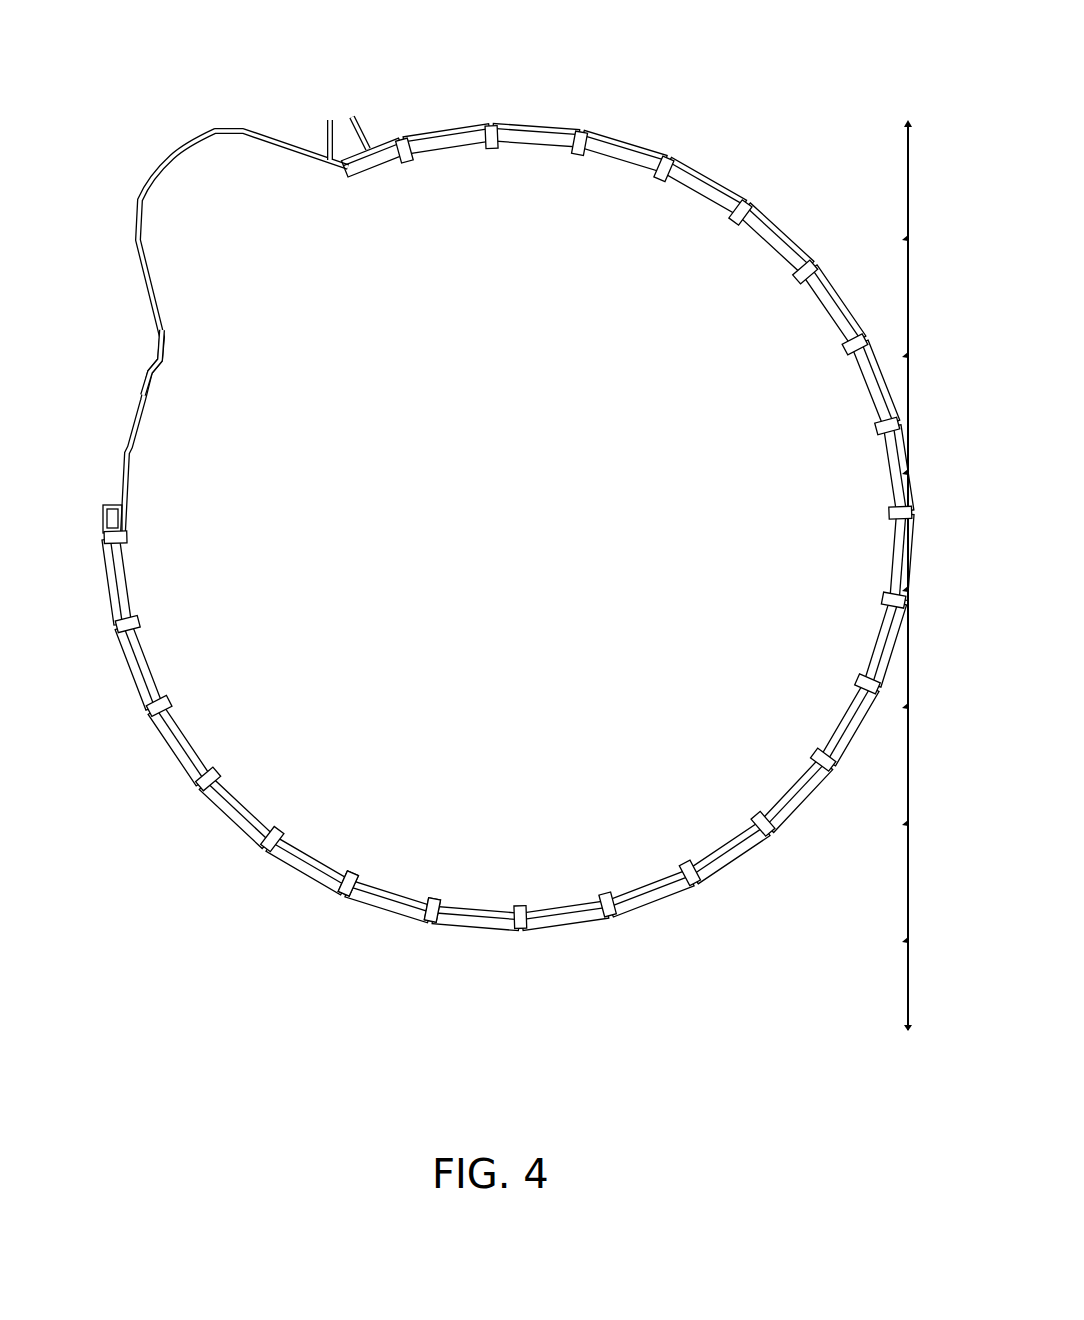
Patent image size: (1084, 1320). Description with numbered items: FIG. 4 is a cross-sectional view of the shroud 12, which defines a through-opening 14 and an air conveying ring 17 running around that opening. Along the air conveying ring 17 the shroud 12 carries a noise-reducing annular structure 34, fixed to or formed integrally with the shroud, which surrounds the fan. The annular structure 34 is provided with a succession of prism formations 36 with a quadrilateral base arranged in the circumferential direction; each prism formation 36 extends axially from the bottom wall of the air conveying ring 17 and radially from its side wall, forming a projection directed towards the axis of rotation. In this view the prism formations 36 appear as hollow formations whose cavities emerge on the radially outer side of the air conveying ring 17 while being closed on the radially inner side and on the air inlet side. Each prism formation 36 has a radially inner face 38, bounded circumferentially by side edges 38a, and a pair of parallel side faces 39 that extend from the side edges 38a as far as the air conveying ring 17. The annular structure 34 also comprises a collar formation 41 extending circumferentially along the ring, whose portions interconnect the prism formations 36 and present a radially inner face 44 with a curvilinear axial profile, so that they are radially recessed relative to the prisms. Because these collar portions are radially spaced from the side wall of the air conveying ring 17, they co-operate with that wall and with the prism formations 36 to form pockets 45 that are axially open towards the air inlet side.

The shroud 12 is at (211, 123).
The through-opening 14 is at (150, 432).
The air conveying ring 17 is at (140, 377).
The noise-reducing annular structure 34 is at (551, 122).
The prism formations 36 is at (762, 815).
The radially inner face 38 is at (436, 898).
The side edges 38a is at (350, 877).
The side faces 39 is at (386, 906).
The collar formation 41 is at (250, 798).
The radially inner face 44 is at (583, 896).
The pockets 45 is at (777, 235).